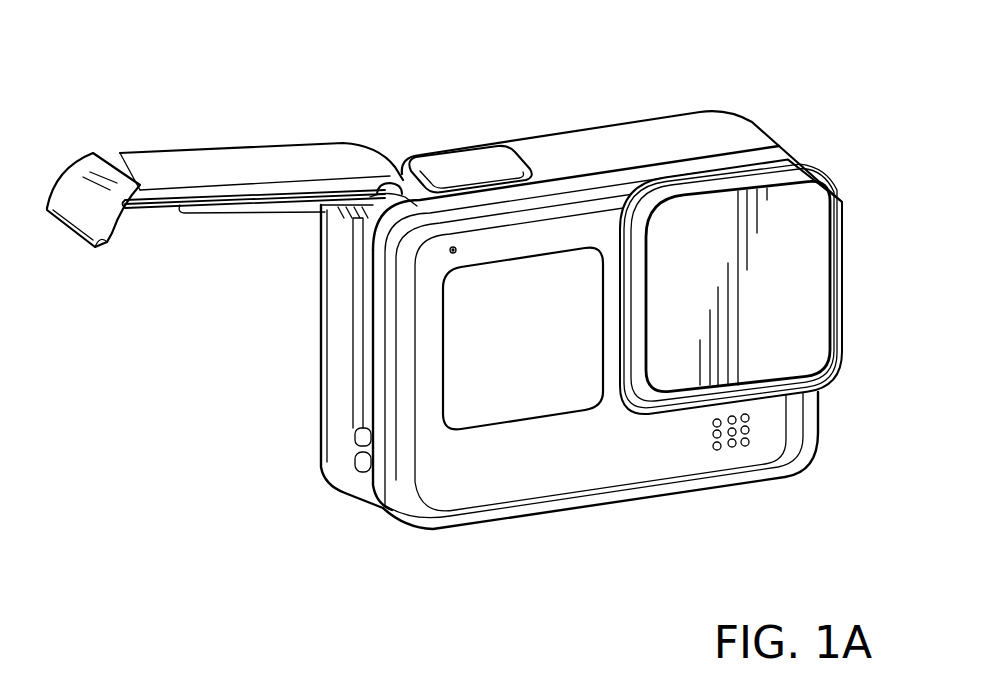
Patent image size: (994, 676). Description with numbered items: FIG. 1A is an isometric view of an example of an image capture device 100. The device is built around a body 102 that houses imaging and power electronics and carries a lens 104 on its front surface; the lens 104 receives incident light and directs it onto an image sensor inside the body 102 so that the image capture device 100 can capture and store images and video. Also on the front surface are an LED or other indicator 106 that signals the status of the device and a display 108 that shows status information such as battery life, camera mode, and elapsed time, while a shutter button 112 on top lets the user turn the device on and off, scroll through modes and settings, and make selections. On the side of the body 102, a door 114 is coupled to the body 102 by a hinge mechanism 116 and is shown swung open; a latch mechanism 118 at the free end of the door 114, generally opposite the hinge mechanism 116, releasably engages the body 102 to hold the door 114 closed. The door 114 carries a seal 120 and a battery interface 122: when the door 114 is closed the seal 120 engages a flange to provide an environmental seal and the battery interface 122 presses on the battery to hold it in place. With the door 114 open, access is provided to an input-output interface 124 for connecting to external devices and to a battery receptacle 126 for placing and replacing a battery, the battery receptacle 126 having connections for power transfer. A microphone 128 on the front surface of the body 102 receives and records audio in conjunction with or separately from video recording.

The image capture device 100 is at (806, 47).
The body 102 is at (638, 132).
The lens 104 is at (804, 285).
The indicator 106 is at (450, 252).
The display 108 is at (528, 400).
The shutter button 112 is at (421, 165).
The door 114 is at (270, 156).
The hinge mechanism 116 is at (397, 186).
The latch mechanism 118 is at (73, 187).
The seal 120 is at (167, 203).
The battery interface 122 is at (214, 214).
The input-output (I/O) interface 124 is at (365, 461).
The battery receptacle 126 is at (364, 237).
The microphone 128 is at (732, 447).